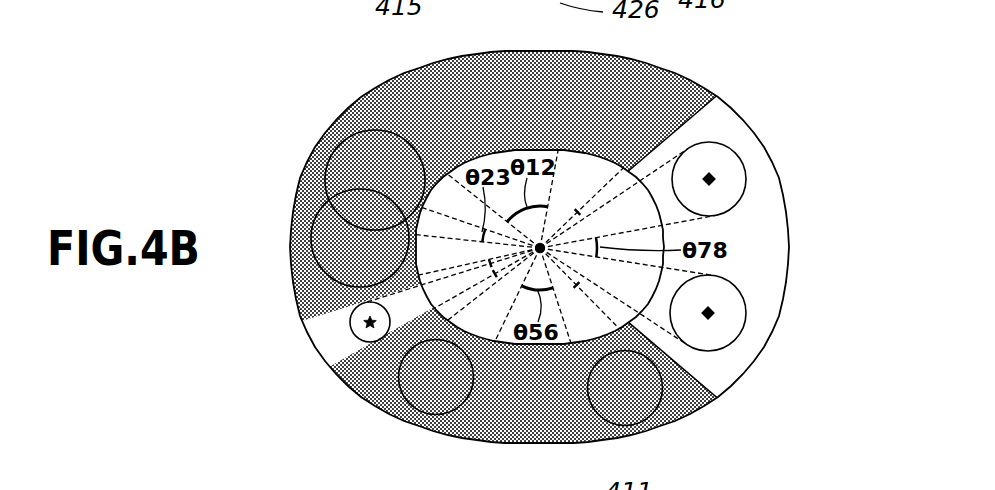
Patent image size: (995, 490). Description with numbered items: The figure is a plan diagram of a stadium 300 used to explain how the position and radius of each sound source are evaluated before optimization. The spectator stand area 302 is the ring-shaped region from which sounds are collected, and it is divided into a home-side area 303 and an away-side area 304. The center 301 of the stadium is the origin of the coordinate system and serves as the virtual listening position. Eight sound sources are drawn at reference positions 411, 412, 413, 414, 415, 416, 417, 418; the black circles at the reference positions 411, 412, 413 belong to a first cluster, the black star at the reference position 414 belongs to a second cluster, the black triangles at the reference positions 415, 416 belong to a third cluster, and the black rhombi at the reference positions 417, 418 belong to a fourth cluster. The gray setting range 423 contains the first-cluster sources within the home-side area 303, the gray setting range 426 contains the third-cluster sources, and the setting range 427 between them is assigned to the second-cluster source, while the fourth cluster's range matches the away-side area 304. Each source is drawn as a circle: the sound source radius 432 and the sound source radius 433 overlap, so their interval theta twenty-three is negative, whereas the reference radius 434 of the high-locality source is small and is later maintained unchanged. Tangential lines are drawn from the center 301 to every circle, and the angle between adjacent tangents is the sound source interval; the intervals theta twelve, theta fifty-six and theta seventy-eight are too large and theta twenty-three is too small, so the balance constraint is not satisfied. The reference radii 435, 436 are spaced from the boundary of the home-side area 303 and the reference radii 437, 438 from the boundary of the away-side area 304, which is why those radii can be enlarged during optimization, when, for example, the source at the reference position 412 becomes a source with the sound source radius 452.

The stadium 300 is at (281, 56).
The center of the stadium 301 is at (547, 253).
The spectator stand area 302 is at (680, 87).
The home-side area 303 is at (340, 123).
The away-side area 304 is at (723, 128).
The reference position 411 is at (616, 105).
The reference position 412 is at (375, 180).
The reference position 413 is at (360, 238).
The reference position 414 is at (347, 322).
The reference position 415 is at (398, 417).
The reference position 416 is at (628, 392).
The reference position 417 is at (711, 313).
The reference position 418 is at (712, 181).
The setting range 423 is at (536, 62).
The setting range 426 is at (545, 446).
The setting range 427 is at (427, 290).
The sound source radius 432 is at (375, 130).
The sound source radius 433 is at (325, 275).
The reference radius 434 is at (368, 322).
The reference radius 435 is at (438, 414).
The reference radius 436 is at (637, 440).
The reference radius 437 is at (723, 352).
The reference radius 438 is at (735, 148).
The sound source radius 452 is at (496, 483).